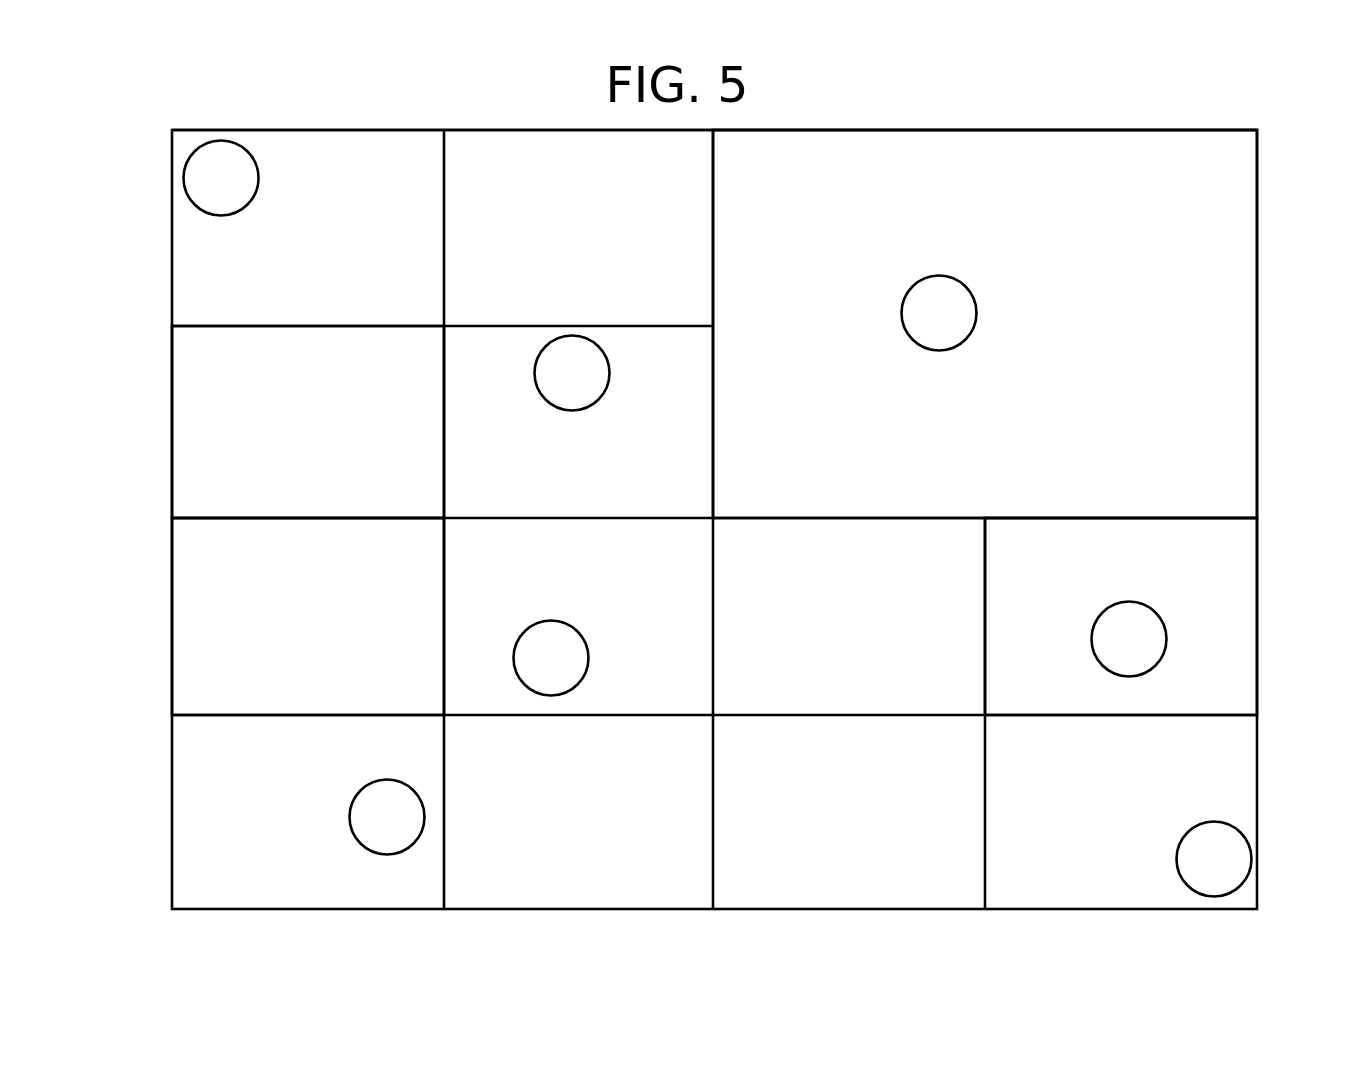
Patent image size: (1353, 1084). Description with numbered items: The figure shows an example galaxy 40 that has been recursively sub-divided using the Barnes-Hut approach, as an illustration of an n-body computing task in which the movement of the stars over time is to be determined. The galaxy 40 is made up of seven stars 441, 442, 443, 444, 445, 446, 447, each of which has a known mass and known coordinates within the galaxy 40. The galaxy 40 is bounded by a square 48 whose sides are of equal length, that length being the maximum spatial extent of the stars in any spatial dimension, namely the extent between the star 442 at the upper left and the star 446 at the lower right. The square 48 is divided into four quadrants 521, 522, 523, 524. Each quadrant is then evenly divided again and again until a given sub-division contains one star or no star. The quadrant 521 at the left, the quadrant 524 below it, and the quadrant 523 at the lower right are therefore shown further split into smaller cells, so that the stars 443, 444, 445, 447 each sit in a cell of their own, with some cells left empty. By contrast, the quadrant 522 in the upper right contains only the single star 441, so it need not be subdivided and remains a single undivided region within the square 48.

The galaxy 40 is at (1259, 248).
The square 48 is at (1189, 128).
The star 441 is at (939, 313).
The star 442 is at (221, 178).
The star 443 is at (572, 373).
The star 444 is at (551, 658).
The star 445 is at (1129, 639).
The star 446 is at (1214, 859).
The star 447 is at (387, 817).
The quadrant 521 is at (220, 428).
The quadrant 522 is at (1189, 438).
The quadrant 523 is at (1198, 574).
The quadrant 524 is at (227, 578).